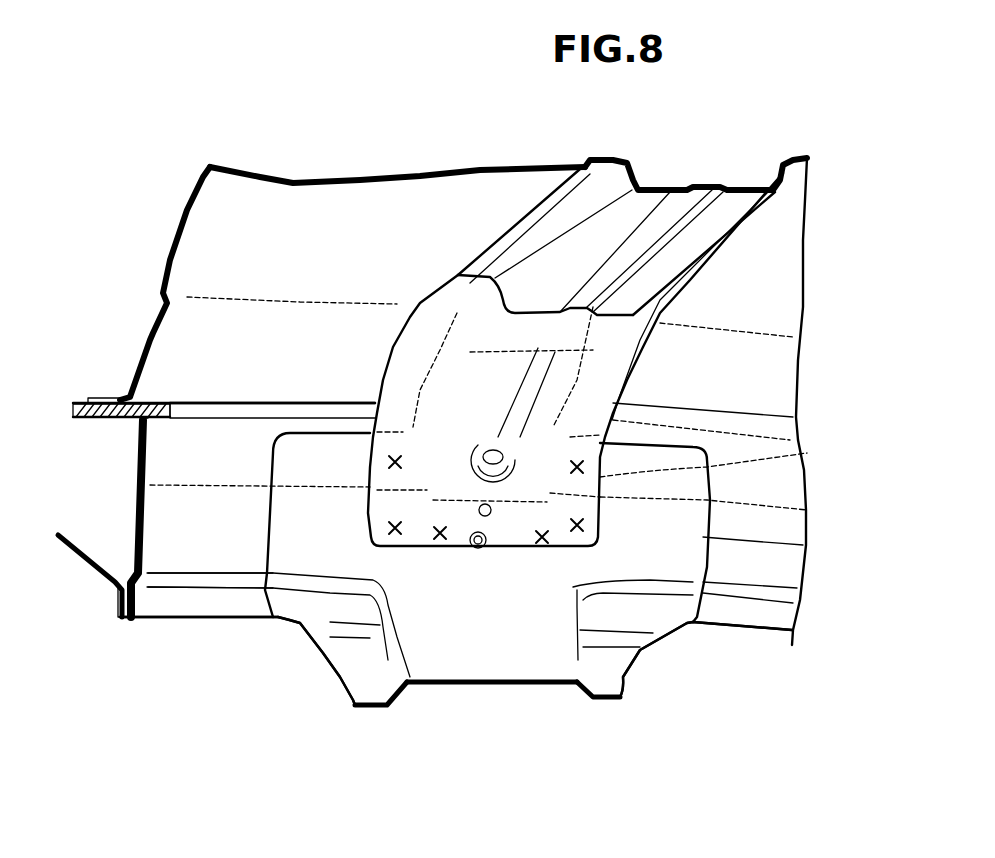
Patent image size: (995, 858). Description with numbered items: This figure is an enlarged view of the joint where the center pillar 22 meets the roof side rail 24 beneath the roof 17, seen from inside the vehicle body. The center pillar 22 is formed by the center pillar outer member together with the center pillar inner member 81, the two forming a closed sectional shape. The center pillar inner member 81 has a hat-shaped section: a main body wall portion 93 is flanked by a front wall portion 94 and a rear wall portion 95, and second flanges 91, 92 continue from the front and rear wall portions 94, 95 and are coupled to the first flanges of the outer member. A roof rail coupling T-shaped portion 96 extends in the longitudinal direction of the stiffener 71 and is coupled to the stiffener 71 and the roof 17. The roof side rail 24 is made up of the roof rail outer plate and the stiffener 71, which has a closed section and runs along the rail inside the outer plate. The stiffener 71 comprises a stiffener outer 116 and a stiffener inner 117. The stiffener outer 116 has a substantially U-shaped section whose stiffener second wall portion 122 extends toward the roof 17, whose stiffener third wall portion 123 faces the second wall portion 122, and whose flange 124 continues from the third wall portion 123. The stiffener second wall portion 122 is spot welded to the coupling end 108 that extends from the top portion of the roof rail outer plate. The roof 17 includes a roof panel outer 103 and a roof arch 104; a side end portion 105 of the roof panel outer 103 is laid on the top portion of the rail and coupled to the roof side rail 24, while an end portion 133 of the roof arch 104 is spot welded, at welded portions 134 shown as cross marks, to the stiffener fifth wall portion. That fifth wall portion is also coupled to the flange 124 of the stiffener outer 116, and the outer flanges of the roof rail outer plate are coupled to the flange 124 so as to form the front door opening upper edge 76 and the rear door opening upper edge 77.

The roof 17 is at (370, 176).
The center pillar 22 is at (402, 735).
The roof side rail 24 is at (240, 418).
The stiffener 71 is at (165, 622).
The front door opening upper edge 76 is at (758, 633).
The rear door opening upper edge 77 is at (213, 612).
The center pillar inner member 81 is at (467, 687).
The second flange 91 is at (608, 685).
The second flange 92 is at (353, 693).
The main body wall portion 93 is at (507, 643).
The front wall portion 94 is at (577, 688).
The rear wall portion 95 is at (410, 688).
The roof rail coupling T-shaped portion 96 is at (803, 544).
The roof panel outer 103 is at (432, 178).
The roof arch 104 is at (700, 187).
The side end portion 105 is at (110, 398).
The coupling end 108 is at (158, 403).
The stiffener outer 116 is at (87, 418).
The stiffener inner 117 is at (230, 543).
The stiffener second wall portion 122 is at (122, 421).
The stiffener third wall portion 123 is at (83, 560).
The flange 124 is at (120, 596).
The end portion 133 is at (803, 455).
The welded portions 134 is at (390, 532).